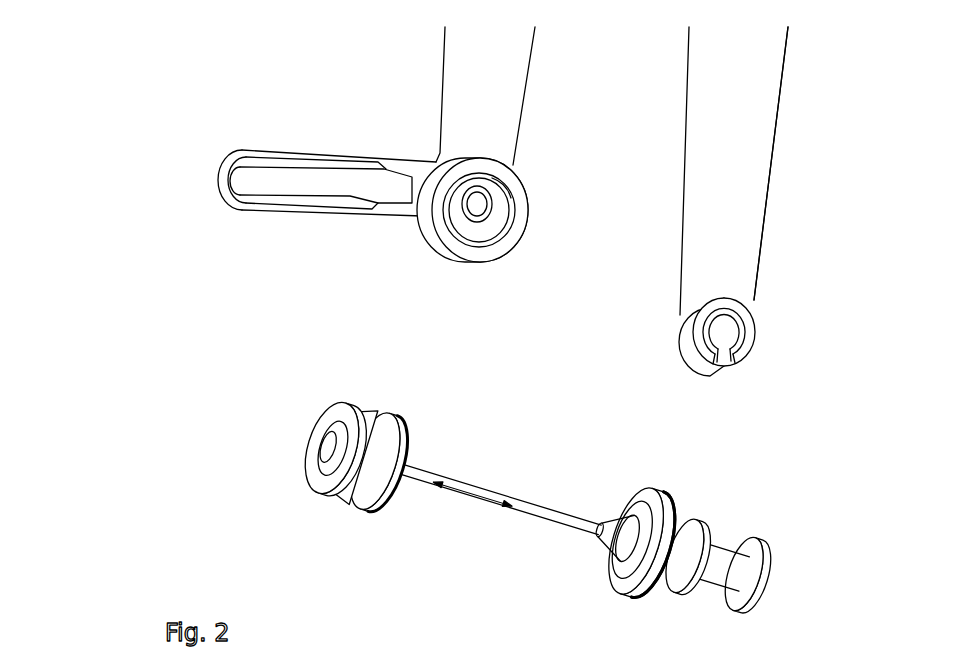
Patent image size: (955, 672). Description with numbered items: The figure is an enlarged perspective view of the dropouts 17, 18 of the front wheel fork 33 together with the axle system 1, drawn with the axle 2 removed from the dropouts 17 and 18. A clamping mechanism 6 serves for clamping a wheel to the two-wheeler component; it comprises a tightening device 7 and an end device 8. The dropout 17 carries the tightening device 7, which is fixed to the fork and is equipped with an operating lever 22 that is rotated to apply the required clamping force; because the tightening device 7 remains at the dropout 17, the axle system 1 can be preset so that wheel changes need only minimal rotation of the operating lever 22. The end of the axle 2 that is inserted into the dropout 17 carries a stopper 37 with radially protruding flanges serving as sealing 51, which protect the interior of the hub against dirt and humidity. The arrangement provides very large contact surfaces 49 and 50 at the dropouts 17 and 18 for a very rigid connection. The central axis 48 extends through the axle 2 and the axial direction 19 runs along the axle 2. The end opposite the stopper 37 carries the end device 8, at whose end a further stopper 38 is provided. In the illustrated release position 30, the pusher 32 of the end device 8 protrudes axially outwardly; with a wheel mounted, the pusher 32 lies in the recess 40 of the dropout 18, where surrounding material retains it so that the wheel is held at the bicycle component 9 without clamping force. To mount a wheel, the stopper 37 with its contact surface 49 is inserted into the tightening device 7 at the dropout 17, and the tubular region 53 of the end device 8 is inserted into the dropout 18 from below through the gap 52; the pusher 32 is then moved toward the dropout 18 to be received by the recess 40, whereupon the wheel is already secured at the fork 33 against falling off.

The axle system 1 is at (531, 336).
The axle 2 is at (491, 490).
The clamping mechanism 6 is at (539, 248).
The tightening device 7 is at (324, 199).
The end device 8 is at (777, 586).
The bicycle component 9 is at (760, 112).
The dropout 17 is at (525, 168).
The dropout 18 is at (772, 357).
The axial direction 19 is at (472, 508).
The operating lever 22 is at (243, 155).
The release position 30 is at (516, 489).
The pusher 32 is at (763, 558).
The front wheel fork 33 is at (757, 175).
The stopper 37 is at (343, 493).
The stopper 38 is at (627, 605).
The recess 40 is at (736, 326).
The central axis 48 is at (478, 487).
The contact surface 49 is at (335, 427).
The contact surface 50 is at (705, 530).
The sealing 51 is at (393, 405).
The gap 52 is at (750, 373).
The tubular region 53 is at (717, 576).